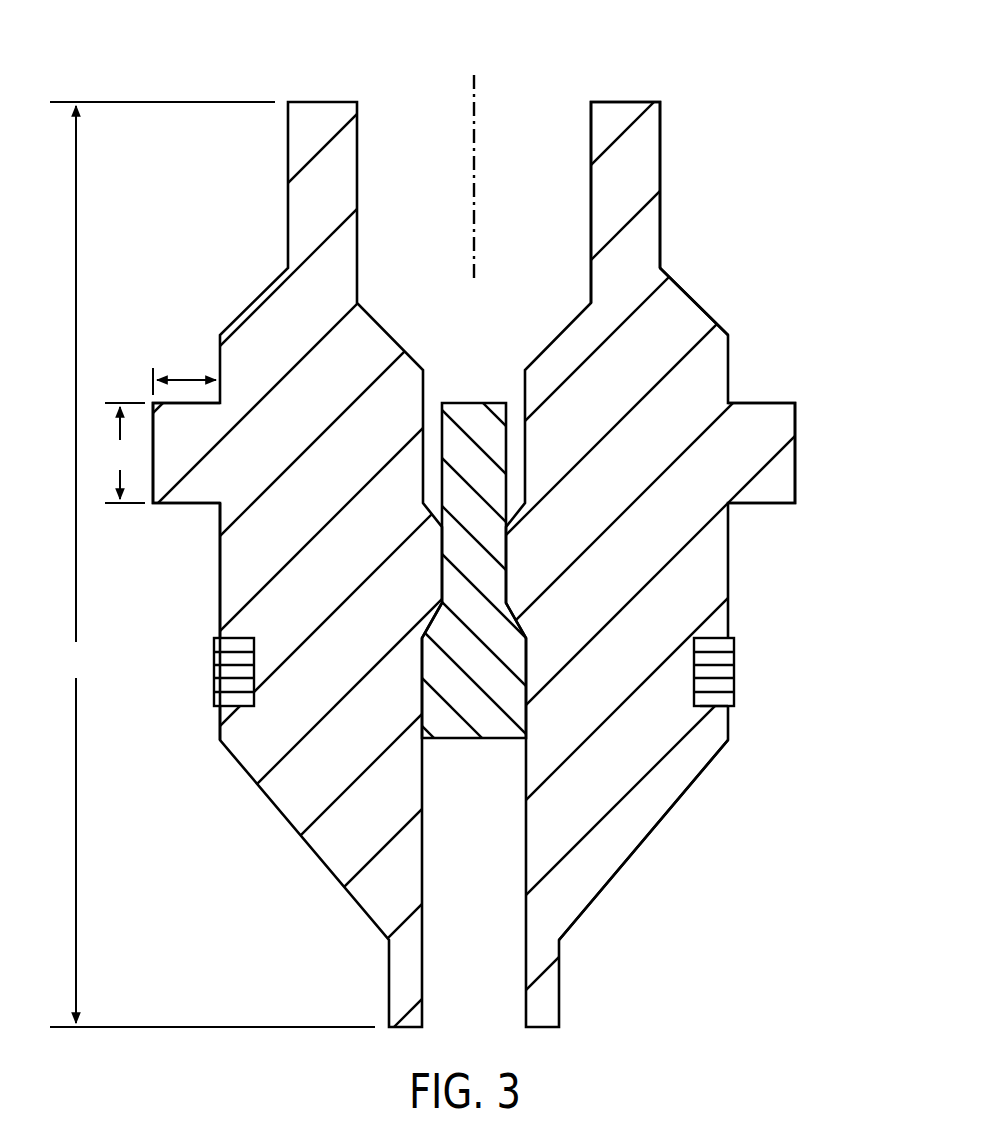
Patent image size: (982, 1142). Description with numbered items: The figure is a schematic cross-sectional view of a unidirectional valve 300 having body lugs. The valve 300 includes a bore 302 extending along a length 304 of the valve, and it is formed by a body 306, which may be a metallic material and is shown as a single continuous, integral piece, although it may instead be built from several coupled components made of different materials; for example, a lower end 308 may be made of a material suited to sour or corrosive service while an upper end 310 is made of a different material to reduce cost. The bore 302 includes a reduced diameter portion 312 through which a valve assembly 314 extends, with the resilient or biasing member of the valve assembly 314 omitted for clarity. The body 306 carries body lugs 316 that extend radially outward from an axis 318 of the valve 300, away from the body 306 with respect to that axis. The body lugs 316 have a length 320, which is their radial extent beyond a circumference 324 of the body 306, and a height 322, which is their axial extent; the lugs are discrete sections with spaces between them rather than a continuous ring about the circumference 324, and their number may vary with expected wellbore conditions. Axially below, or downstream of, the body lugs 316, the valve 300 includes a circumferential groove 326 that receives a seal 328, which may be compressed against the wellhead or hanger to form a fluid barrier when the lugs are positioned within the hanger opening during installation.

The unidirectional valve 300 is at (779, 120).
The bore 302 is at (590, 128).
The length 304 is at (212, 564).
The body 306 is at (321, 419).
The lower end 308 is at (736, 822).
The upper end 310 is at (735, 289).
The reduced diameter portion 312 is at (606, 563).
The valve assembly 314 is at (453, 550).
The body lugs 316 is at (200, 482).
The axis 318 is at (474, 110).
The length 320 is at (188, 378).
The height 322 is at (122, 453).
The circumference 324 is at (205, 588).
The circumferential groove 326 is at (704, 708).
The seal 328 is at (734, 672).